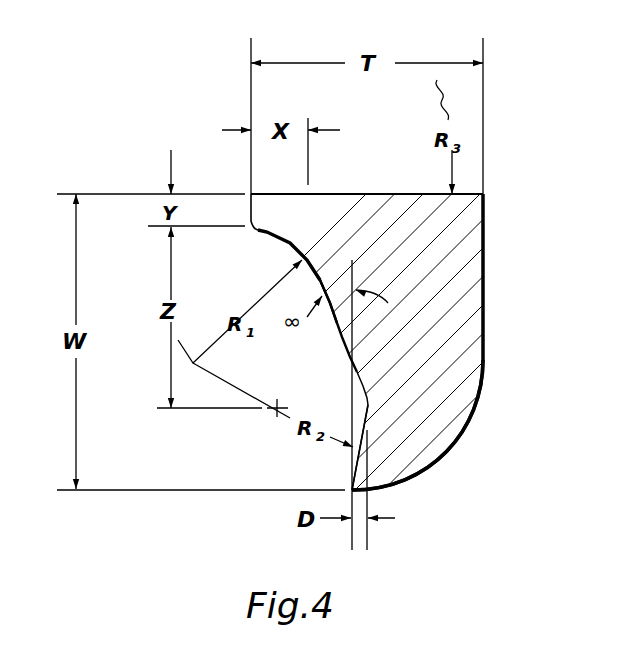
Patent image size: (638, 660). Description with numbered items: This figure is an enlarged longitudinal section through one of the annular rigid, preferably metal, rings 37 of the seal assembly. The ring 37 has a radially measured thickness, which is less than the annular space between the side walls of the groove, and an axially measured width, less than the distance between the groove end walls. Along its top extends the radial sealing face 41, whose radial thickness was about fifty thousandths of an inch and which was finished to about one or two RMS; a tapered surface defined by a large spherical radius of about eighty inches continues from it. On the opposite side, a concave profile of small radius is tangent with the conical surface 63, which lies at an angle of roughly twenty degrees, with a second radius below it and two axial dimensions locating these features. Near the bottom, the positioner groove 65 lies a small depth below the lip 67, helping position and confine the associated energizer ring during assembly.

The rigid ring 37 is at (460, 332).
The radial sealing face 41 is at (281, 193).
The conical surface 63 is at (323, 284).
The positioner groove 65 is at (368, 407).
The lip 67 is at (352, 467).